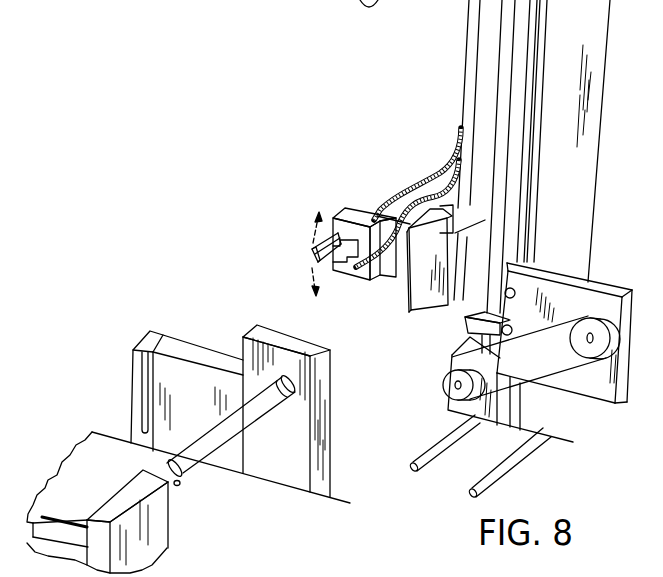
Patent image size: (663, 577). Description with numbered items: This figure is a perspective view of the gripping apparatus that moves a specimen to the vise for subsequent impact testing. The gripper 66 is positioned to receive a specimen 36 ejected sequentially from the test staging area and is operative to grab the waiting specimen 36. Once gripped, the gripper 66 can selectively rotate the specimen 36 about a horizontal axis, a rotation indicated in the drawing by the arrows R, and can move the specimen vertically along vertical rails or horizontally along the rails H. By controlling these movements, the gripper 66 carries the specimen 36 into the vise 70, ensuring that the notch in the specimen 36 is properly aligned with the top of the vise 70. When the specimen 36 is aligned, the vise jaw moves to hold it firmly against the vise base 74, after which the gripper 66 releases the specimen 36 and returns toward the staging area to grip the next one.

The gripper 66 is at (347, 208).
The specimen 36 is at (312, 250).
The vise base 74 is at (142, 485).
The vise 70 is at (175, 532).
The rails H is at (517, 458).
The rotation direction arrows R is at (313, 280).